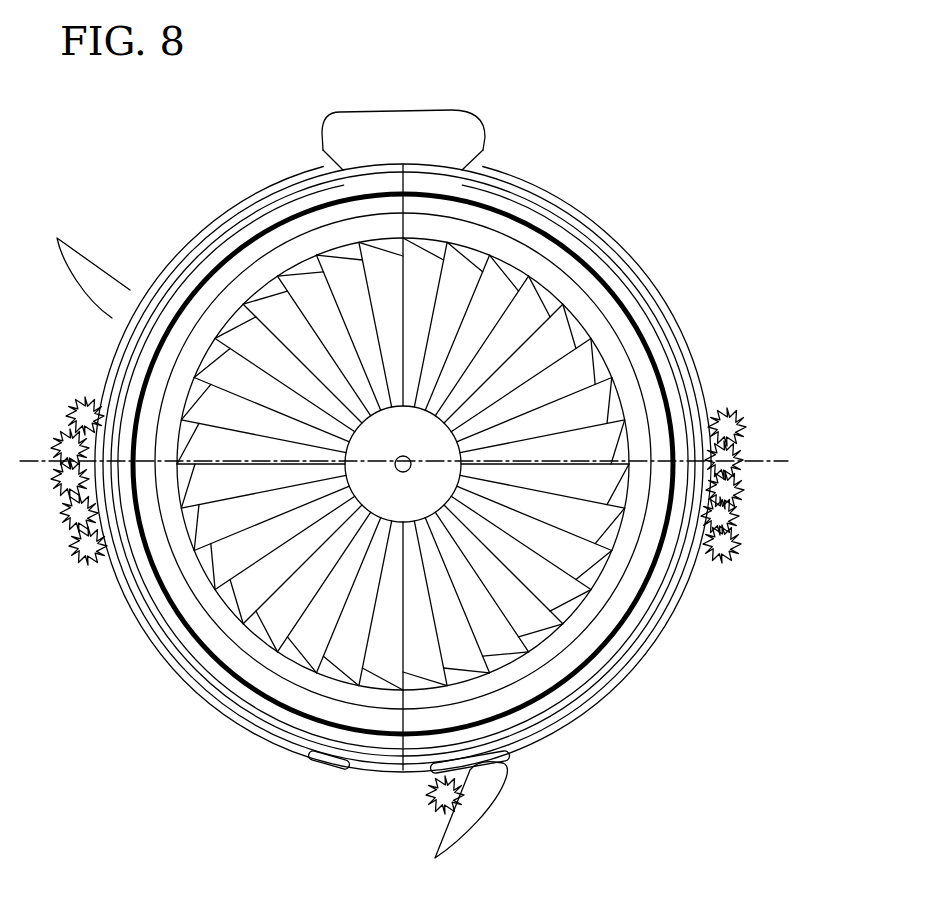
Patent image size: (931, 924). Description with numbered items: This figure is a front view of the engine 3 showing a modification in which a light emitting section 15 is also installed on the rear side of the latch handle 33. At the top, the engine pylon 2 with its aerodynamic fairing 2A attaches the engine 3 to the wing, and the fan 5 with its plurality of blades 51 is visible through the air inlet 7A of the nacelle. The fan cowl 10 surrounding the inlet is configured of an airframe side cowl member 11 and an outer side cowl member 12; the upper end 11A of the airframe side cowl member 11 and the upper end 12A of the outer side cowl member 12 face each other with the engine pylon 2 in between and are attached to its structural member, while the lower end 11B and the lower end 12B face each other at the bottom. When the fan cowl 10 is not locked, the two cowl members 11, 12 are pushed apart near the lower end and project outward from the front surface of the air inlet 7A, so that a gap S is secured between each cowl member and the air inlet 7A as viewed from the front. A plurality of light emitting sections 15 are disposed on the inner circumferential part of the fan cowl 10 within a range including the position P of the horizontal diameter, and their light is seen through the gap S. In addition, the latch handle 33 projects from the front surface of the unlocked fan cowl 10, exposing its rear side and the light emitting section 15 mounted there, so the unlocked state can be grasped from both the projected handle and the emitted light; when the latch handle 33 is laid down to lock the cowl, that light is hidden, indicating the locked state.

The engine pylon 2 is at (466, 100).
The fairing 2A is at (378, 110).
The engine 3 is at (630, 146).
The fan 5 is at (215, 553).
The air inlet 7A is at (280, 697).
The fan cowl 10 is at (403, 464).
The airframe side cowl member 11 is at (178, 238).
The upper end of the airframe side cowl member 11A is at (327, 163).
The lower end of the airframe side cowl member 11B is at (340, 766).
The outer side cowl member 12 is at (653, 258).
The upper end of the outer side cowl member 12A is at (473, 165).
The lower end of the outer side cowl member 12B is at (437, 768).
The light emitting section 15 is at (75, 420).
The latch handle 33 is at (468, 830).
The blades 51 is at (243, 598).
The gap S is at (107, 392).
The position of a diameter of the fan cowl in a horizontal direction P is at (413, 462).